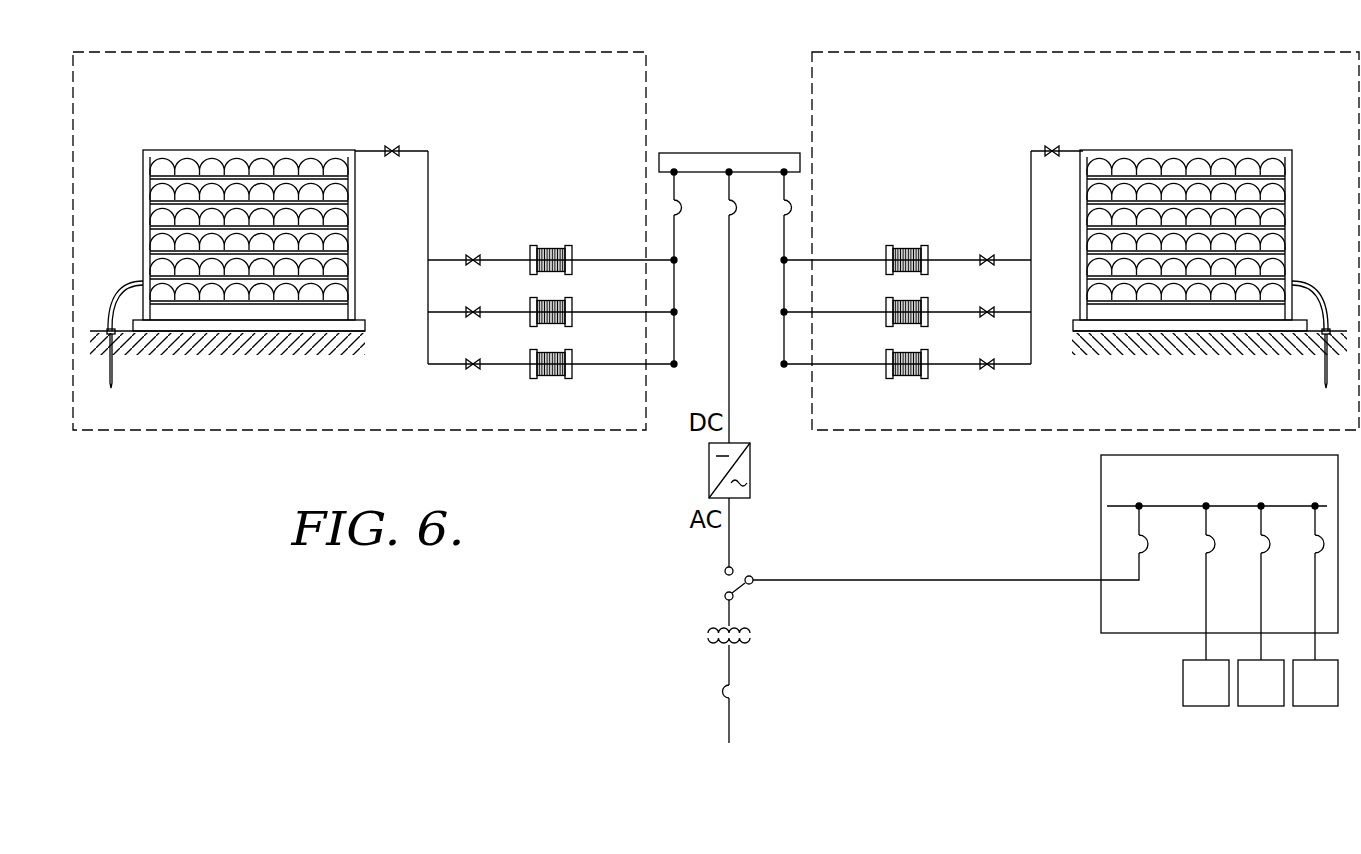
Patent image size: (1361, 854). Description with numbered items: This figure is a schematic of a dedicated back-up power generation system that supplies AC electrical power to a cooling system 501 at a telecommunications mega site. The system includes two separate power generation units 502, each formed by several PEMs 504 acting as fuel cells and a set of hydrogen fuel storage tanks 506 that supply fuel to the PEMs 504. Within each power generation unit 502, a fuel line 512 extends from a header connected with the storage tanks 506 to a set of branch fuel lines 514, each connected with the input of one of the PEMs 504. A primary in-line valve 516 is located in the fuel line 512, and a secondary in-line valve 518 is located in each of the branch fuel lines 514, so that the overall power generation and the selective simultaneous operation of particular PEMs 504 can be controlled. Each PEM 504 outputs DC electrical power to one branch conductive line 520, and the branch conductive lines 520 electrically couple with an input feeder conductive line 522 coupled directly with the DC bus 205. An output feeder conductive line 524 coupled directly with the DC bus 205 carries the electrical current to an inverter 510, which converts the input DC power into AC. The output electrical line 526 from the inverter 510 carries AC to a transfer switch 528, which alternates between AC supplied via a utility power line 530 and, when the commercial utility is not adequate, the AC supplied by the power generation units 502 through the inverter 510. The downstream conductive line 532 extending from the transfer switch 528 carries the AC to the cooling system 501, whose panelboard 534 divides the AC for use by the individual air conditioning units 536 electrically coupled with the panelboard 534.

The power generation unit 502 is at (378, 51).
The hydrogen fuel storage tanks 506 is at (188, 158).
The primary in-line valve 516 is at (392, 148).
The fuel line 512 is at (428, 150).
The branch conductive line 520 is at (606, 258).
The secondary in-line valve 518 is at (473, 255).
The PEM 504 is at (545, 245).
The branch fuel lines 514 is at (430, 367).
The DC collector bus 205 is at (759, 168).
The input feeder conductive line 522 is at (677, 230).
The output feeder conductive line 524 is at (732, 360).
The inverter 510 is at (752, 467).
The output electrical line 526 is at (732, 528).
The transfer switch 528 is at (739, 594).
The utility power line 530 is at (732, 719).
The downstream conductive line 532 is at (943, 579).
The panelboard 534 is at (1101, 494).
The air conditioning units 536 is at (1215, 706).
The cooling system 501 is at (1090, 645).